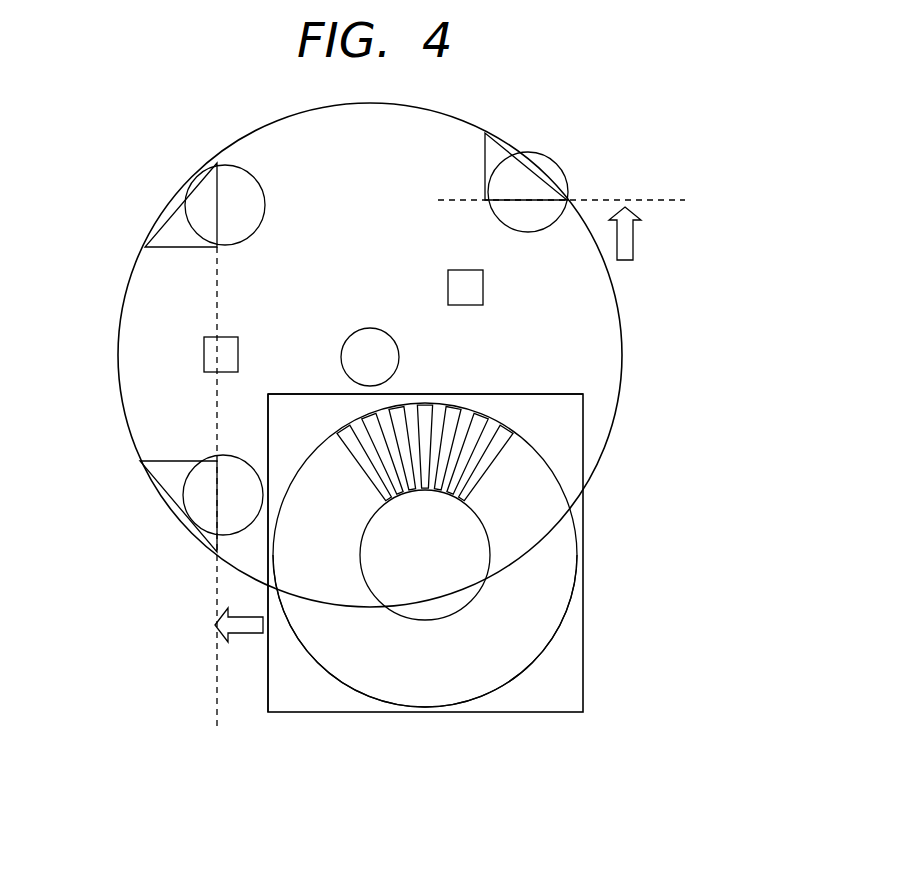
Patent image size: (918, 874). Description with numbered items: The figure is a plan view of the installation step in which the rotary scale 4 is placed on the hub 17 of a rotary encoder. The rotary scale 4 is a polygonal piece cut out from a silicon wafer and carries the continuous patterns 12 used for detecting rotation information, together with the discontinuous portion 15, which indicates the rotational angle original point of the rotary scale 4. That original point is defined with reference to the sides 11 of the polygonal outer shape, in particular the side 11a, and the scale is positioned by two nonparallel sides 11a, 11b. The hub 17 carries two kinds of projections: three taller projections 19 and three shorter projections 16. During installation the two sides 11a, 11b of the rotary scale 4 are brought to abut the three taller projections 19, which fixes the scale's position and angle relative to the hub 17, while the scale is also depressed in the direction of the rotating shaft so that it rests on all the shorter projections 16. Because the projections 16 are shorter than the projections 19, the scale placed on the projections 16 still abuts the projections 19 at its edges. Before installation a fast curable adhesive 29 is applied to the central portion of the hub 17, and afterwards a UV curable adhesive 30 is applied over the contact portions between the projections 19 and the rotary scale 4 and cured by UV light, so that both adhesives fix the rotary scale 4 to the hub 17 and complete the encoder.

The rotary scale 4 is at (568, 657).
The sides of the outer shape of the rotary scale 11 is at (583, 560).
The side 11a is at (527, 394).
The side 11b is at (268, 673).
The continuous patterns 12 is at (497, 462).
The discontinuous portion 15 is at (425, 400).
The projections 16 is at (230, 336).
The hub 17 is at (612, 392).
The projections 19 is at (172, 220).
The fast curable adhesive 29 is at (383, 337).
The UV curable adhesive 30 is at (265, 200).